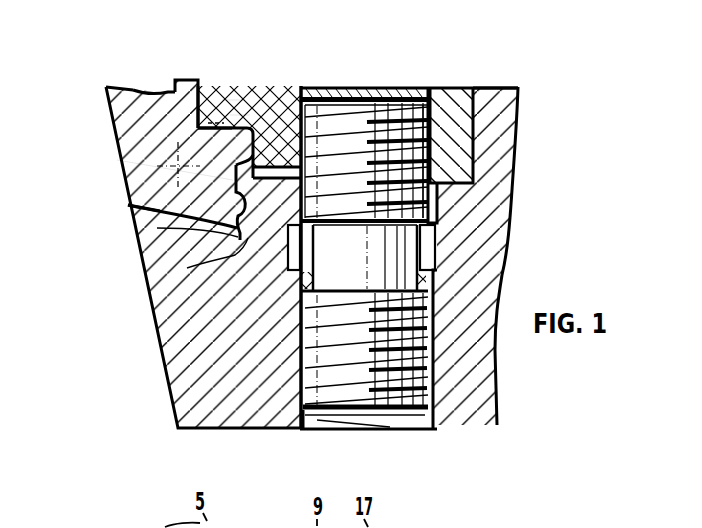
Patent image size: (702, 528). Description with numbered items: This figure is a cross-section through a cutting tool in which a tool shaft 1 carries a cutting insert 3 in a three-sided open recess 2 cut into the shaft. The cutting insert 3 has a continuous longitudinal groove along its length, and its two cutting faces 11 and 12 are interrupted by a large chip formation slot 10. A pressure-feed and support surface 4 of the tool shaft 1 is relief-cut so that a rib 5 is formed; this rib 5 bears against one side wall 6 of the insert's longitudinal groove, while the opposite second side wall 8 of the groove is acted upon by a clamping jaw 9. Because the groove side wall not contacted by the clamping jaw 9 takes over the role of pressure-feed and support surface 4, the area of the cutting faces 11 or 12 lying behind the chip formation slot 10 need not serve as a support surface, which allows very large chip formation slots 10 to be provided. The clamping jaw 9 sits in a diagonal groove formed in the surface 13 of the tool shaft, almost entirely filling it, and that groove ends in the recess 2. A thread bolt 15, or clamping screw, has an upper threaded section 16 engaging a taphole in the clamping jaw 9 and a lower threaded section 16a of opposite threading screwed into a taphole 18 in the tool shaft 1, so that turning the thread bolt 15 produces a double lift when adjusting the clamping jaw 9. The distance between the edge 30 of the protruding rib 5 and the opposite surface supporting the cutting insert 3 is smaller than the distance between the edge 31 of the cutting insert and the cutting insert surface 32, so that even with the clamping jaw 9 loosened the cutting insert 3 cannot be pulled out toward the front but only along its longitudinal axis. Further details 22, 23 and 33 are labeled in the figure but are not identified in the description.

The tool shaft 1 is at (178, 367).
The three-sided open recess 2 is at (324, 86).
The cutting insert 3 is at (233, 168).
The pressure-feed and support surface 4 is at (128, 204).
The rib 5 is at (201, 86).
The side wall 6 is at (233, 102).
The second side wall 8 is at (237, 120).
The clamping jaw 9 is at (450, 103).
The chip formation slot 10 is at (137, 90).
The cutting face 11 is at (182, 80).
The cutting face 12 is at (258, 165).
The surface of the tool shaft 13 is at (497, 88).
The thread bolt 15 is at (428, 232).
The upper threaded section 16 is at (345, 127).
The lower threaded section 16a is at (433, 348).
The taphole 18 is at (430, 428).
The outer corner edge 22 is at (106, 87).
The lower groove line 23 is at (187, 268).
The edge of the protruding rib 30 is at (200, 128).
The edge of the cutting insert 31 is at (256, 158).
The cutting insert surface 32 is at (157, 228).
The contact line 33 is at (233, 180).